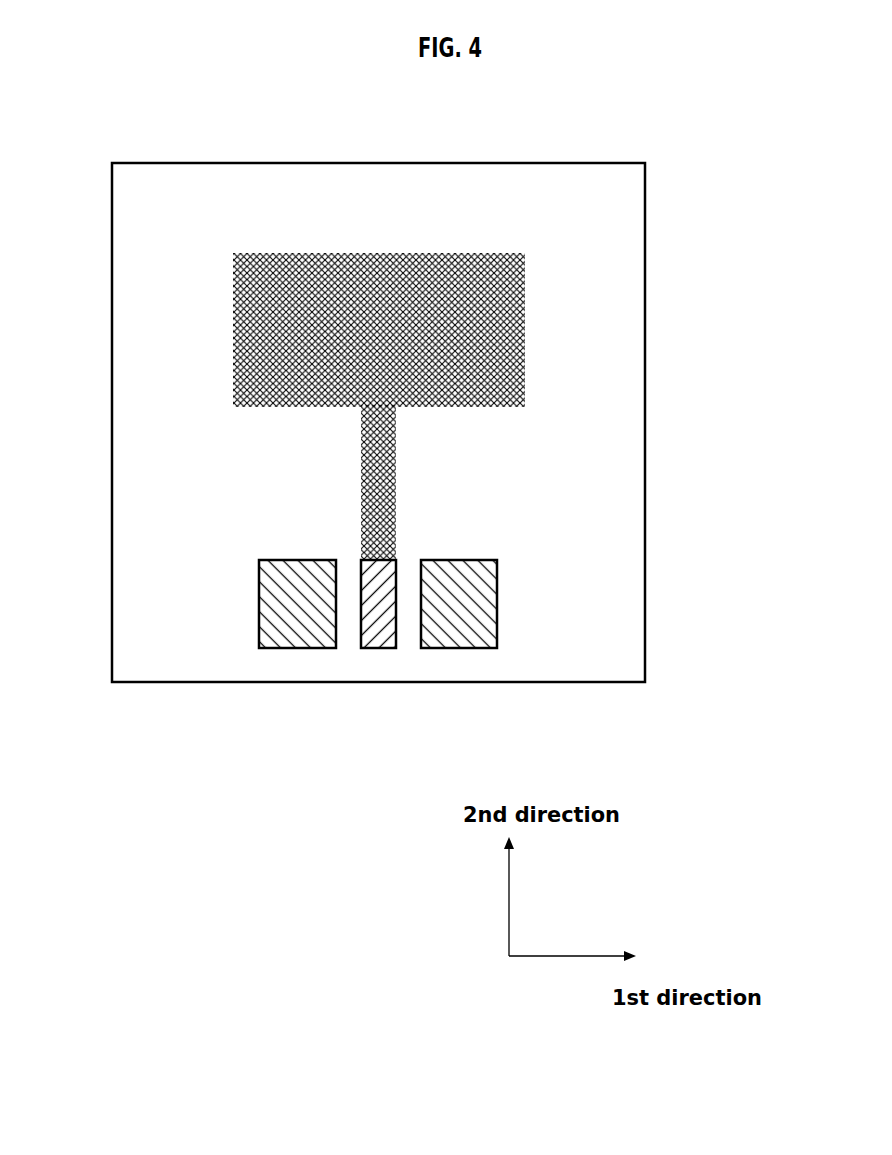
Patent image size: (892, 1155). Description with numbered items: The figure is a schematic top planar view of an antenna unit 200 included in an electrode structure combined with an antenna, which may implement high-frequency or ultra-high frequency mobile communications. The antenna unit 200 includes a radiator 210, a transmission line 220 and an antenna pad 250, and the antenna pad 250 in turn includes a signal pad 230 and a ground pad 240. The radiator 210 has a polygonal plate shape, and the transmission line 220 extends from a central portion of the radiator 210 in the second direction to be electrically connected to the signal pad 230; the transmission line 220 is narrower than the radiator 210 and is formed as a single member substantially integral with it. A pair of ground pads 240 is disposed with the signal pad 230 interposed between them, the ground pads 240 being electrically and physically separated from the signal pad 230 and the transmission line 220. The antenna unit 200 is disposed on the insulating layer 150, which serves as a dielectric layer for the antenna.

The insulating layer 150 is at (633, 223).
The antenna unit 200 is at (274, 238).
The radiator 210 is at (525, 330).
The transmission line 220 is at (396, 478).
The signal pad 230 is at (372, 648).
The ground pad 240 is at (485, 757).
The antenna pad 250 is at (378, 684).